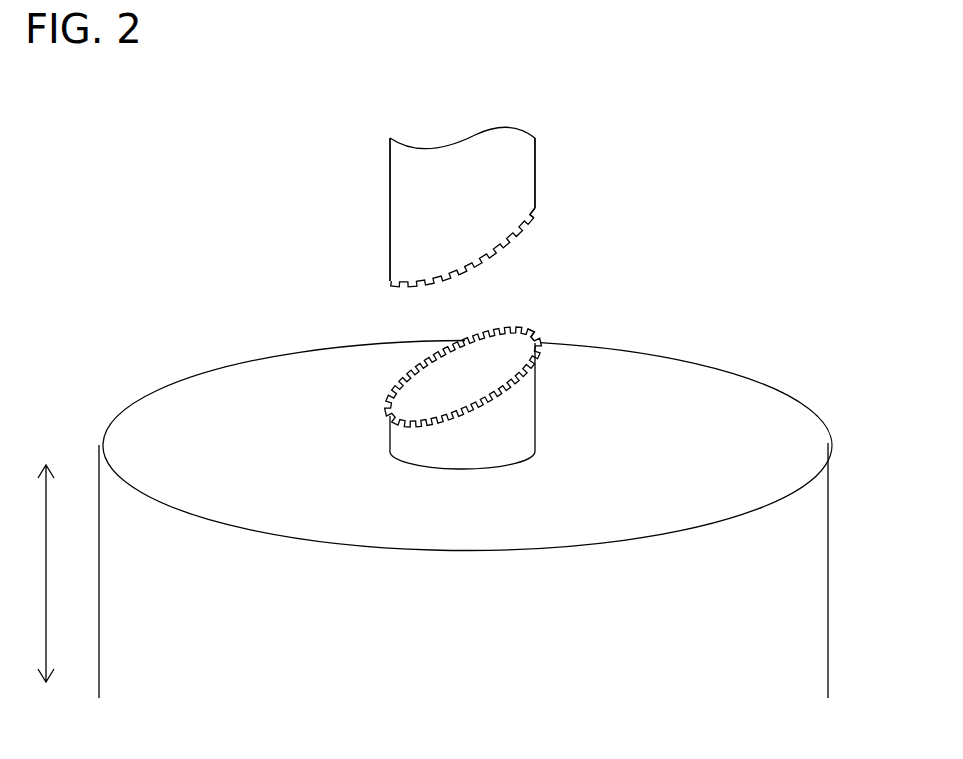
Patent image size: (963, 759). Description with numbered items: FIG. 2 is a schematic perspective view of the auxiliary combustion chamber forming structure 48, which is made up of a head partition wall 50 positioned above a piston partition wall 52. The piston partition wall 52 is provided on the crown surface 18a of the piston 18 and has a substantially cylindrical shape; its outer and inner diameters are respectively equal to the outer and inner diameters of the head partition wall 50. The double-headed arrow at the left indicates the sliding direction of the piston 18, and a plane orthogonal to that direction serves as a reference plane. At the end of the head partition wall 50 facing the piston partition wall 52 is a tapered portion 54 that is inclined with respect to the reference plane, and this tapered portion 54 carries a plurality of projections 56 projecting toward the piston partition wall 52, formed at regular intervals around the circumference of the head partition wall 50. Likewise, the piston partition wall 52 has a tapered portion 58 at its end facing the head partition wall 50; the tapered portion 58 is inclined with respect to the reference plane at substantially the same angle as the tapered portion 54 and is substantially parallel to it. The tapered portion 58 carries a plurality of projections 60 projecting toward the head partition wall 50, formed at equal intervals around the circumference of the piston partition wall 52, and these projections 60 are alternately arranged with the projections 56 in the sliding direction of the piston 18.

The piston 18 is at (829, 563).
The crown surface 18a is at (705, 432).
The auxiliary combustion chamber forming structure 48 is at (313, 110).
The head partition wall 50 is at (537, 165).
The piston partition wall 52 is at (537, 422).
The tapered portion 54 is at (390, 281).
The projections 56 is at (534, 220).
The tapered portion 58 is at (530, 330).
The projections 60 is at (430, 369).